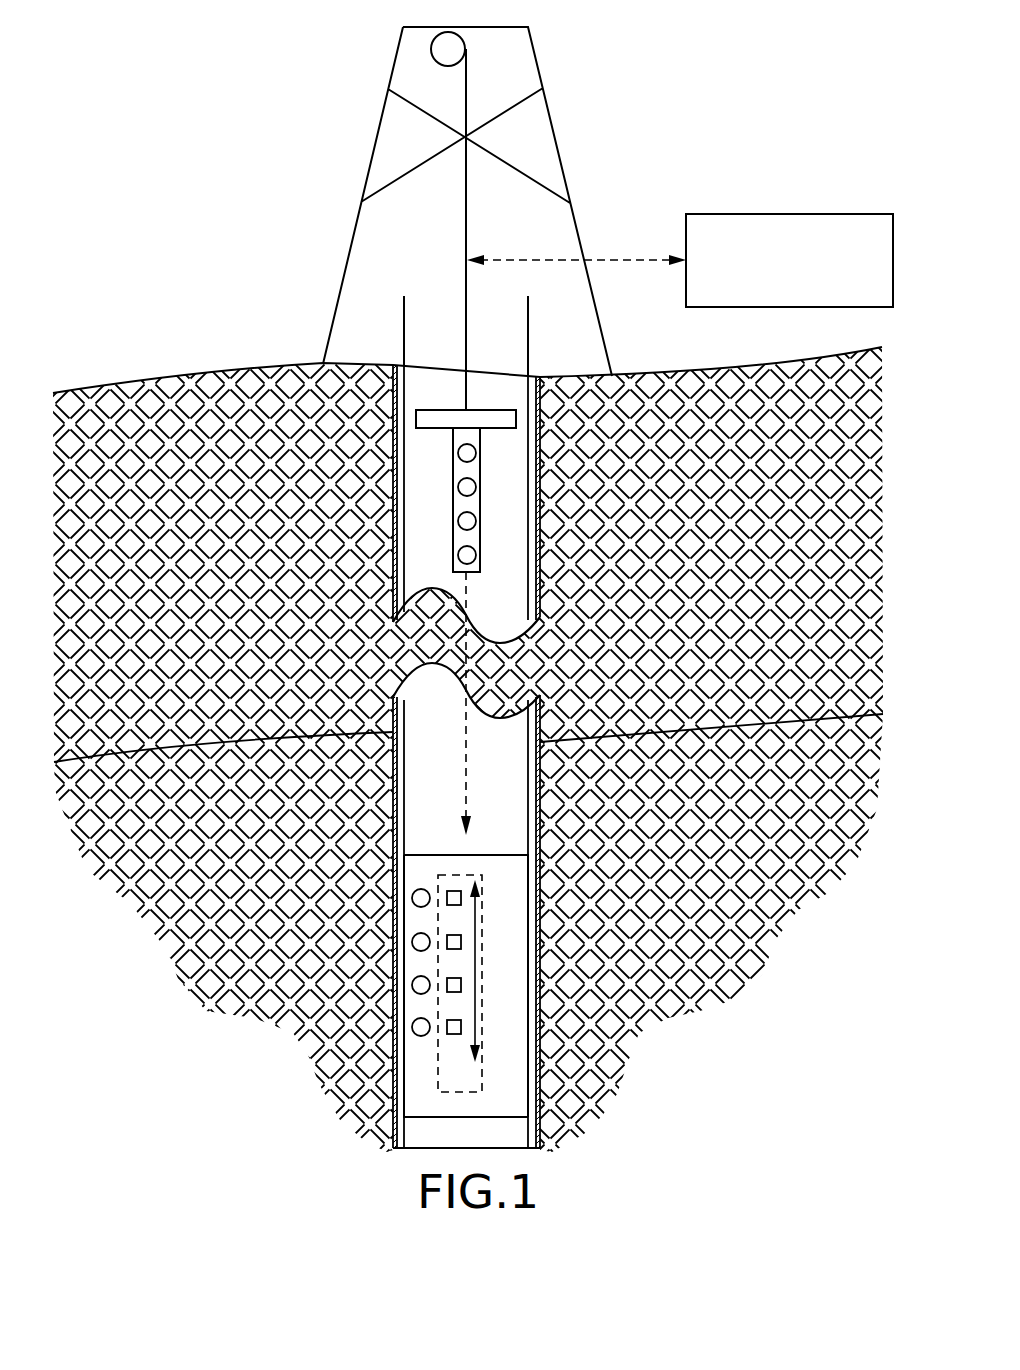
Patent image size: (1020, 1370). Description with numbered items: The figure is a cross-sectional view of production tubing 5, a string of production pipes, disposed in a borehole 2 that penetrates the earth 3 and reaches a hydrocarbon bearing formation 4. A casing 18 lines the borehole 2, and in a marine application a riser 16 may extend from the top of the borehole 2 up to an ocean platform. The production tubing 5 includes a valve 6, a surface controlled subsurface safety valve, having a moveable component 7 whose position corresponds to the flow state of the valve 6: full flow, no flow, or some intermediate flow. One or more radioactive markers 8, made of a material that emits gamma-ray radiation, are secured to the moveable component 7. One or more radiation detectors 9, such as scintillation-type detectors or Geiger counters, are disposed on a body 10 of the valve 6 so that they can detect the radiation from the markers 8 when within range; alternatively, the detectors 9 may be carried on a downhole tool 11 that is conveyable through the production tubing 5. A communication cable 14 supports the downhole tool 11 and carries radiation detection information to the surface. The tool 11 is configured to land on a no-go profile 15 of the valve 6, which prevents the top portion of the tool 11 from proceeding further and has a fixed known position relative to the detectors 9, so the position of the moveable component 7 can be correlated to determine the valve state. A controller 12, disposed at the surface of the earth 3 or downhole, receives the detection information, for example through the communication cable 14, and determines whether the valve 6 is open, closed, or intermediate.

The borehole 2 is at (466, 732).
The earth 3 is at (232, 419).
The hydrocarbon bearing formation 4 is at (233, 786).
The production tubing 5 is at (529, 578).
The valve 6 is at (467, 979).
The moveable component 7 is at (483, 920).
The radioactive markers 8 is at (462, 985).
The radiation detectors 9 is at (458, 521).
The body 10 is at (417, 1061).
The downhole tool 11 is at (505, 418).
The controller 12 is at (776, 294).
The communication cable 14 is at (467, 271).
The no-go profile 15 is at (438, 866).
The riser 16 is at (528, 346).
The casing 18 is at (540, 525).